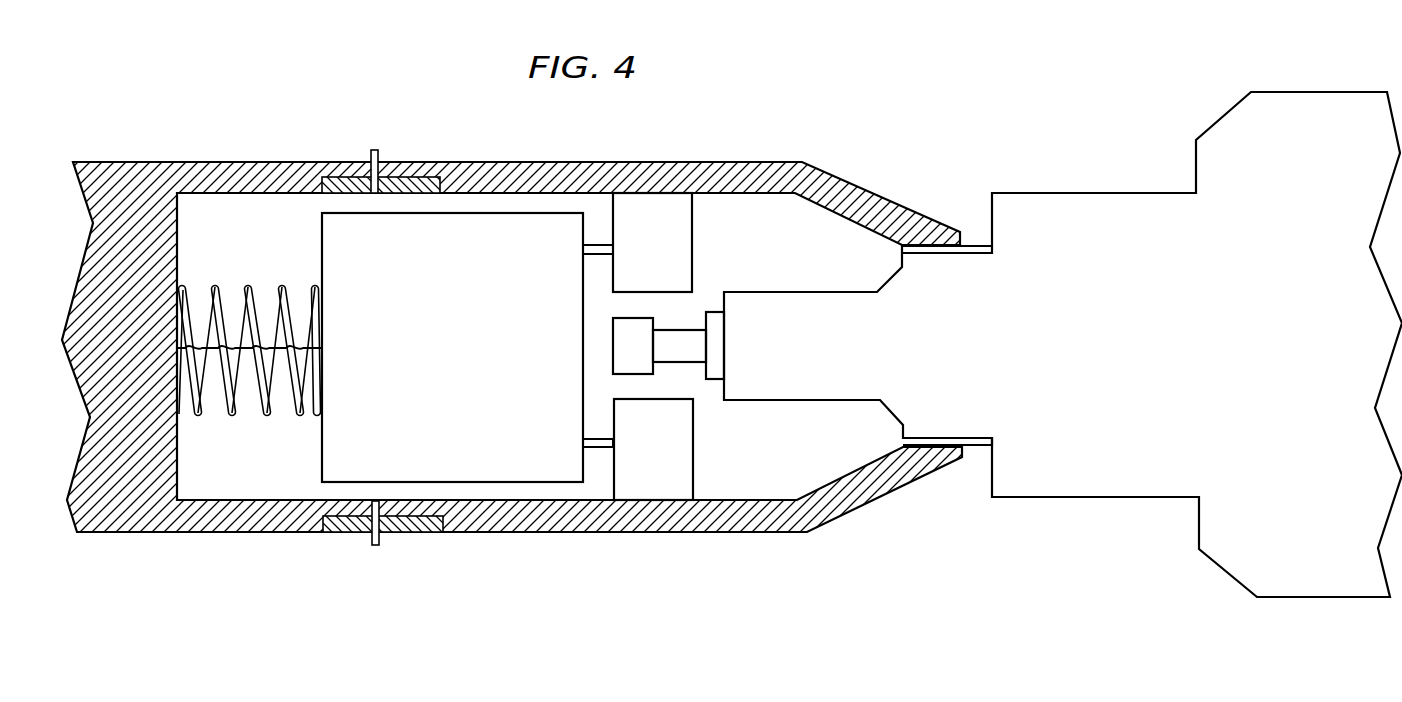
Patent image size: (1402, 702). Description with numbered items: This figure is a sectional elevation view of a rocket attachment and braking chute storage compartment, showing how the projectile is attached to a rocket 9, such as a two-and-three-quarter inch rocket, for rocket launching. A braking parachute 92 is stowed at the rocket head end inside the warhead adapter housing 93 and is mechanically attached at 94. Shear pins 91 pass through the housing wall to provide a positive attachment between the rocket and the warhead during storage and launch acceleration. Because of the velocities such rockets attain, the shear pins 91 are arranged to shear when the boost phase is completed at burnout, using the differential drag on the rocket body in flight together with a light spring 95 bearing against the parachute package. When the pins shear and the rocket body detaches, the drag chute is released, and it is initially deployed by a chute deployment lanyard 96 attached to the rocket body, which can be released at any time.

The rocket 9 is at (732, 347).
The shear pins 91 is at (378, 152).
The braking parachute 92 is at (503, 221).
The warhead adapter housing 93 is at (745, 533).
The mechanical attachment 94 is at (597, 256).
The light spring 95 is at (267, 416).
The chute deployment lanyard 96 is at (318, 337).